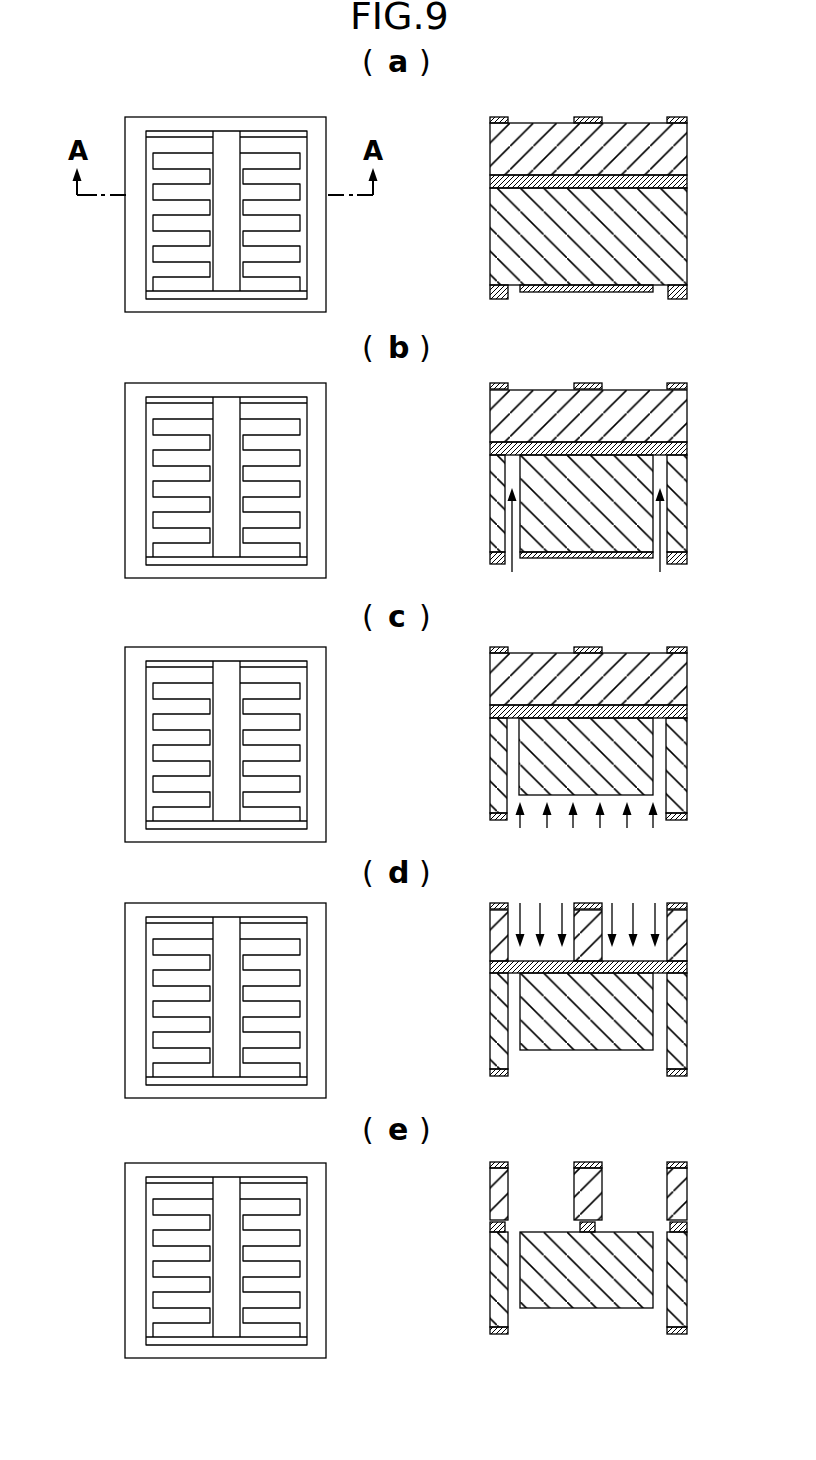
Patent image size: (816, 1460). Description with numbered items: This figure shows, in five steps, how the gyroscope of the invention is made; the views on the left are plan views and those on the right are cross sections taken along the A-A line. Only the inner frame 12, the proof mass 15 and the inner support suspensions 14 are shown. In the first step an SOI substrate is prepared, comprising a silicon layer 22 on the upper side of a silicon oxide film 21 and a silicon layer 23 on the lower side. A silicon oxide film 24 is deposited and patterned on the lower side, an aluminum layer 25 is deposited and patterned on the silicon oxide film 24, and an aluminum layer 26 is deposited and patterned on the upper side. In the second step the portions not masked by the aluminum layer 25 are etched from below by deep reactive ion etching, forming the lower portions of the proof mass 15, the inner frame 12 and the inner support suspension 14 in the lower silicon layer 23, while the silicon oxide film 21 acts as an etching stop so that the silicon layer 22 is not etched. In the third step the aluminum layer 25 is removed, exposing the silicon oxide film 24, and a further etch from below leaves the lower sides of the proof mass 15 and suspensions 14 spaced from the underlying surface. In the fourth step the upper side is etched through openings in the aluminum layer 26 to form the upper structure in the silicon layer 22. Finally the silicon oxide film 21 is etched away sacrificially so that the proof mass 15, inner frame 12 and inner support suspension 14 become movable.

The inner frame 12 is at (167, 117).
The inner support suspension 14 is at (284, 138).
The proof mass 15 is at (247, 140).
The silicon oxide film 21 is at (490, 181).
The silicon layer 22 is at (289, 147).
The silicon layer 23 is at (498, 236).
The silicon oxide film 24 is at (490, 289).
The aluminum layer 25 is at (490, 297).
The aluminum layer 26 is at (490, 121).